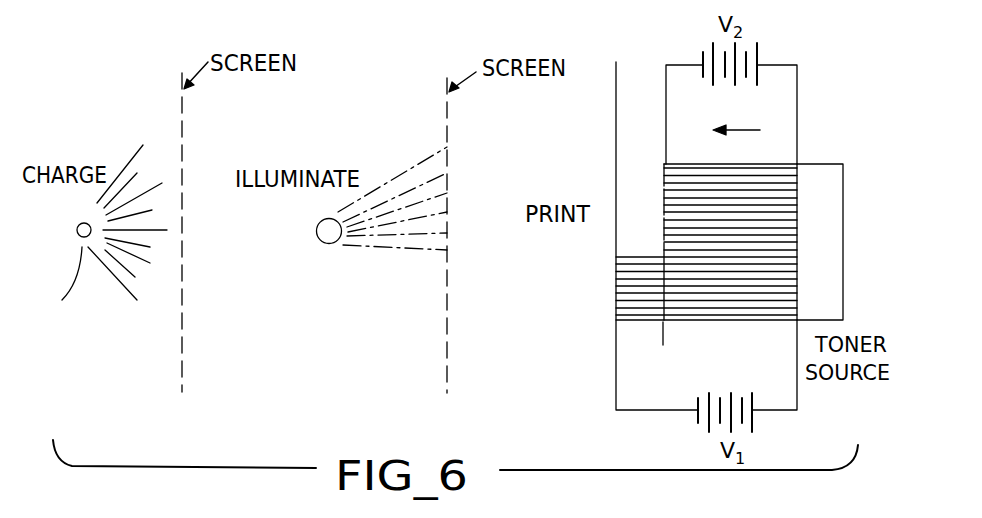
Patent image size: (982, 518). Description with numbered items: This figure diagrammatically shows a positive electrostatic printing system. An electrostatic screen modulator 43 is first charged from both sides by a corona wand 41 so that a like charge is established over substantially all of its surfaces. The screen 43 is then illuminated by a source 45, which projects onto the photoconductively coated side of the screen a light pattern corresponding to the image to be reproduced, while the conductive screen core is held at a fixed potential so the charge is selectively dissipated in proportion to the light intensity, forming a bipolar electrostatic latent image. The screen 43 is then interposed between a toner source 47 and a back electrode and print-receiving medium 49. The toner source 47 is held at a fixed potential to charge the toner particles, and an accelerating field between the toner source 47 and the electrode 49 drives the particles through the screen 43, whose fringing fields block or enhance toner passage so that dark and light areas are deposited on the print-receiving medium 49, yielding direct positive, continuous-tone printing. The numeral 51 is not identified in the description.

The corona wand 41 is at (77, 228).
The electrostatic screen modulator 43 is at (182, 342).
The illumination source 45 is at (320, 240).
The toner source 47 is at (833, 187).
The back electrode and print-receiving medium 49 is at (617, 72).
The toner particle layer 51 is at (742, 165).